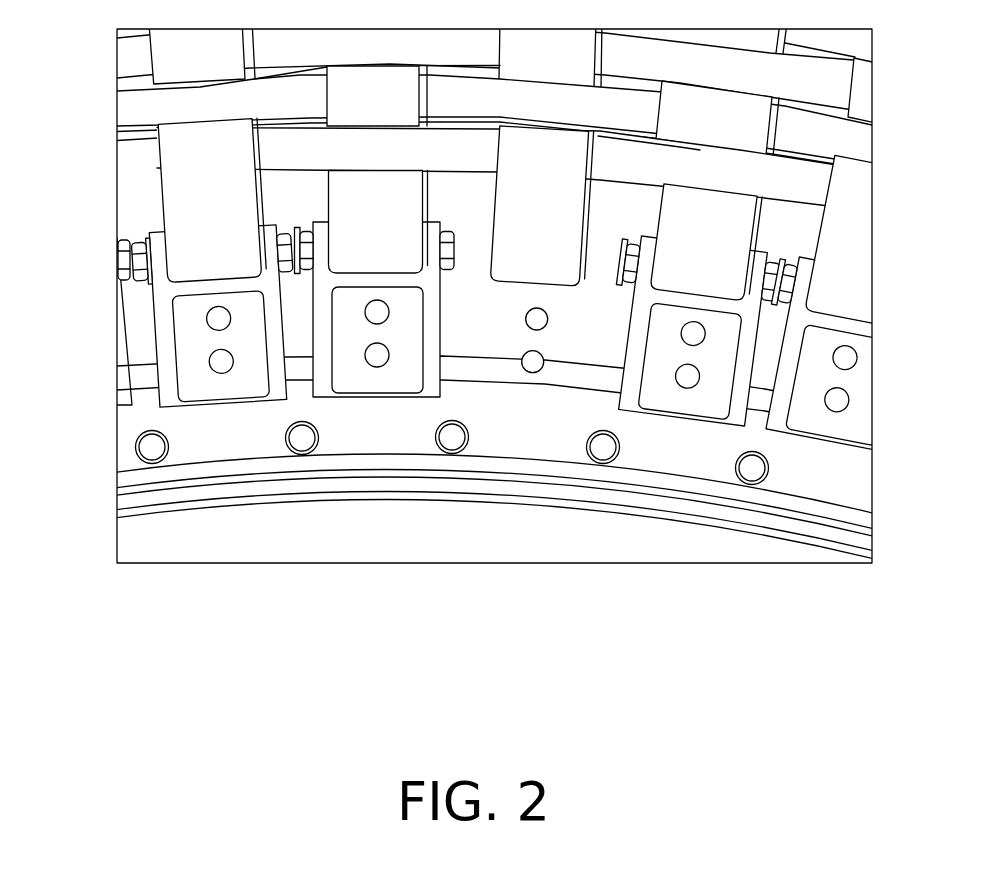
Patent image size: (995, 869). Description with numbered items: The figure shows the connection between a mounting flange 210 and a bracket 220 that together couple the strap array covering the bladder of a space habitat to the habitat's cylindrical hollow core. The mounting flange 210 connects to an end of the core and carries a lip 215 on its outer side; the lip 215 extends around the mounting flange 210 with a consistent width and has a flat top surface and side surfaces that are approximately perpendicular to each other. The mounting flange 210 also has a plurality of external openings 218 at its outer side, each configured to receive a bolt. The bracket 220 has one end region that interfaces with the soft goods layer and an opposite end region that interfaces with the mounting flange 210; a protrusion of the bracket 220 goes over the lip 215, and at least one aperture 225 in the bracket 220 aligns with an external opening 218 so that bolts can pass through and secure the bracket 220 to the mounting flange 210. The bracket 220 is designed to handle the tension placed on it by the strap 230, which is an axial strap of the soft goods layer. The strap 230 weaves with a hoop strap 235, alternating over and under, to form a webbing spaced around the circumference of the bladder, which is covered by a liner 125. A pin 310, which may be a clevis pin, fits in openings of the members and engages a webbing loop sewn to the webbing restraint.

The liner 125 is at (137, 203).
The mounting flange 210 is at (128, 428).
The lip 215 is at (585, 380).
The external openings 218 is at (543, 358).
The bracket 220 is at (408, 337).
The aperture 225 is at (845, 402).
The strap 230 is at (855, 275).
The hoop strap 235 is at (862, 140).
The pin 310 is at (135, 262).